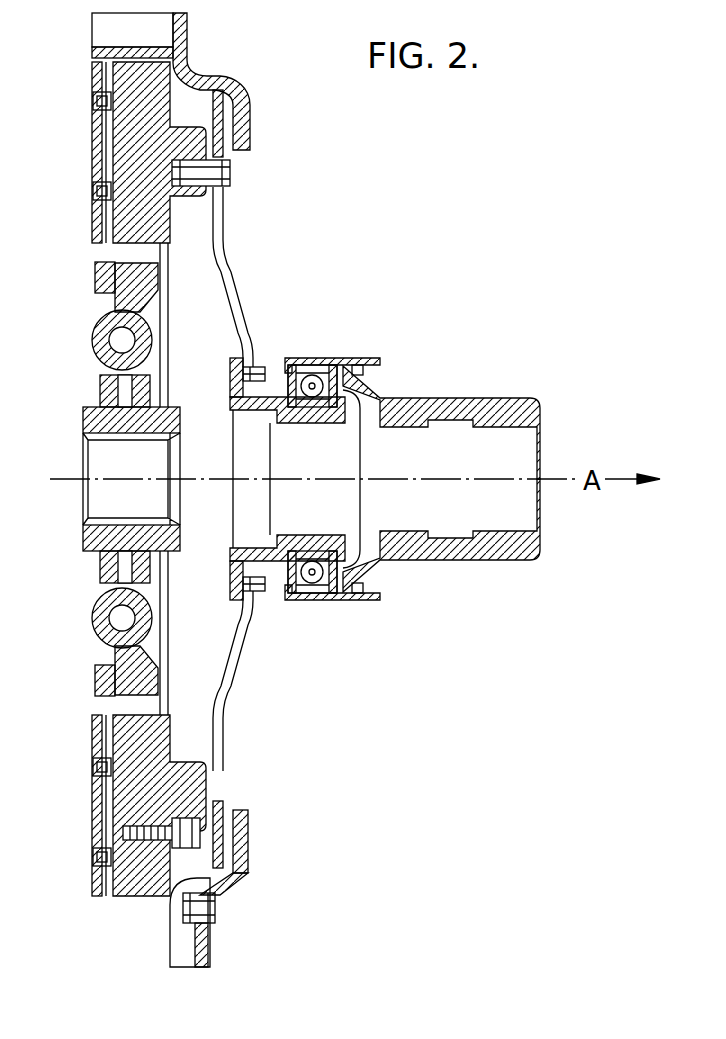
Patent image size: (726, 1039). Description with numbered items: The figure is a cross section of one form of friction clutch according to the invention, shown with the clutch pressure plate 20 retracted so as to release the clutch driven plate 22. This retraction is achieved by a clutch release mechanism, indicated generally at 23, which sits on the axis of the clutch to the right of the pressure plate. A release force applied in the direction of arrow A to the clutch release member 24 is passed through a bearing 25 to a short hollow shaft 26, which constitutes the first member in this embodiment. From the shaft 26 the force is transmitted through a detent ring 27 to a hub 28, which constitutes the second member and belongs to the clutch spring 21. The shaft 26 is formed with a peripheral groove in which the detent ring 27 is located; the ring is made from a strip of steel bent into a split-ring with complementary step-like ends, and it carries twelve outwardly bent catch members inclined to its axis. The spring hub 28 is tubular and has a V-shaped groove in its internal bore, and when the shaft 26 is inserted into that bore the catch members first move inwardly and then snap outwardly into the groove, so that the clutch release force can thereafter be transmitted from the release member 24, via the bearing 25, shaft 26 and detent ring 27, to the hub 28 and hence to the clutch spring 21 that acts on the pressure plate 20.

The clutch pressure plate 20 is at (170, 218).
The clutch spring 21 is at (243, 318).
The clutch driven plate 22 is at (97, 214).
The clutch release mechanism 23 is at (296, 359).
The clutch release member 24 is at (462, 406).
The bearing 25 is at (311, 405).
The short hollow shaft 26 is at (346, 410).
The detent ring 27 is at (247, 405).
The hub 28 is at (233, 383).